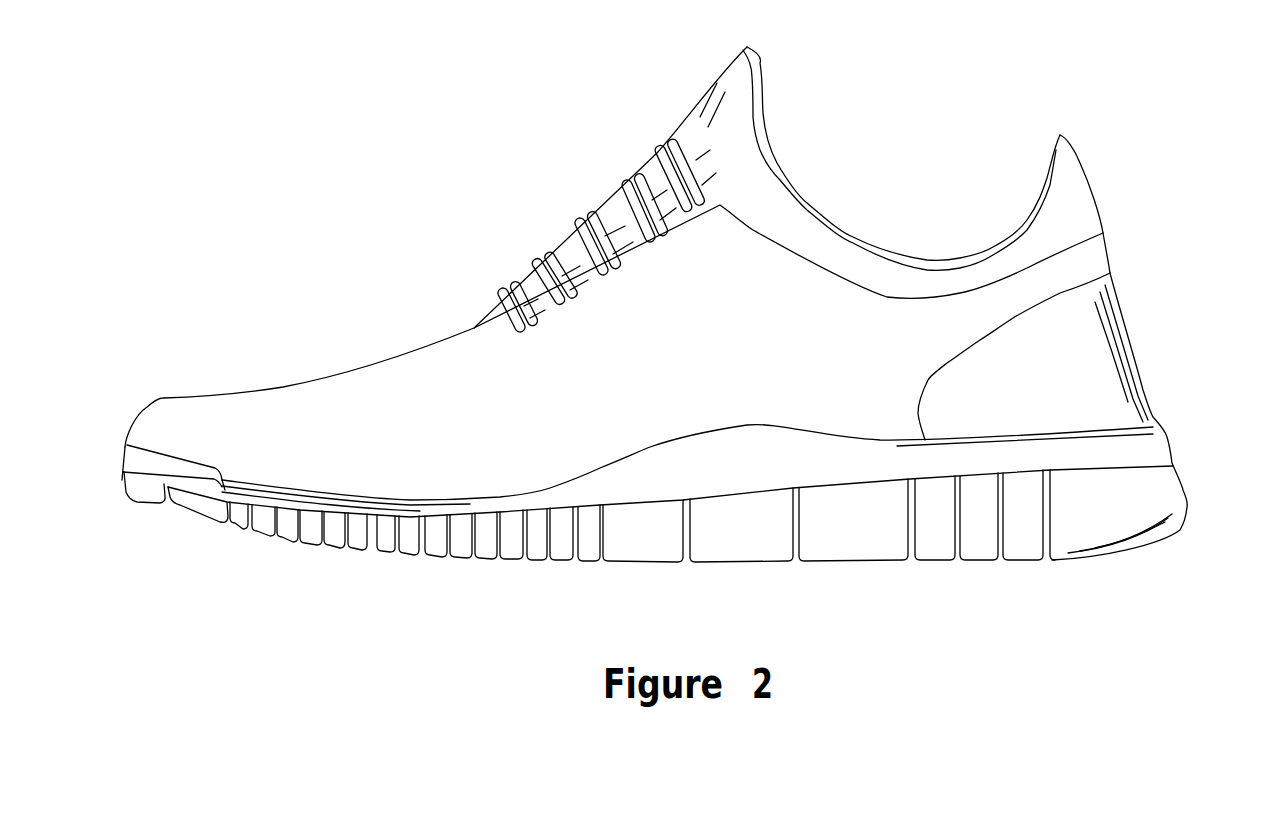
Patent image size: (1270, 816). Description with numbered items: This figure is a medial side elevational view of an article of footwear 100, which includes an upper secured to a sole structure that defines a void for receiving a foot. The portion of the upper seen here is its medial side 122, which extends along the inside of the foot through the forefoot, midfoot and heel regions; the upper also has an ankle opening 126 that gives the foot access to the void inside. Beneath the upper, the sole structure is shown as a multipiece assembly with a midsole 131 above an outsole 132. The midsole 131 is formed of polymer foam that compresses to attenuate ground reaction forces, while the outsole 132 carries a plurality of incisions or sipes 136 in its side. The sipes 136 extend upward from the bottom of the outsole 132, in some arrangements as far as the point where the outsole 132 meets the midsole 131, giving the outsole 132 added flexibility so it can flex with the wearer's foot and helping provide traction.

The article of footwear 100 is at (471, 187).
The medial side 122 is at (657, 283).
The ankle opening 126 is at (953, 250).
The midsole 131 is at (1143, 470).
The outsole 132 is at (1030, 563).
The sipes 136 is at (397, 553).